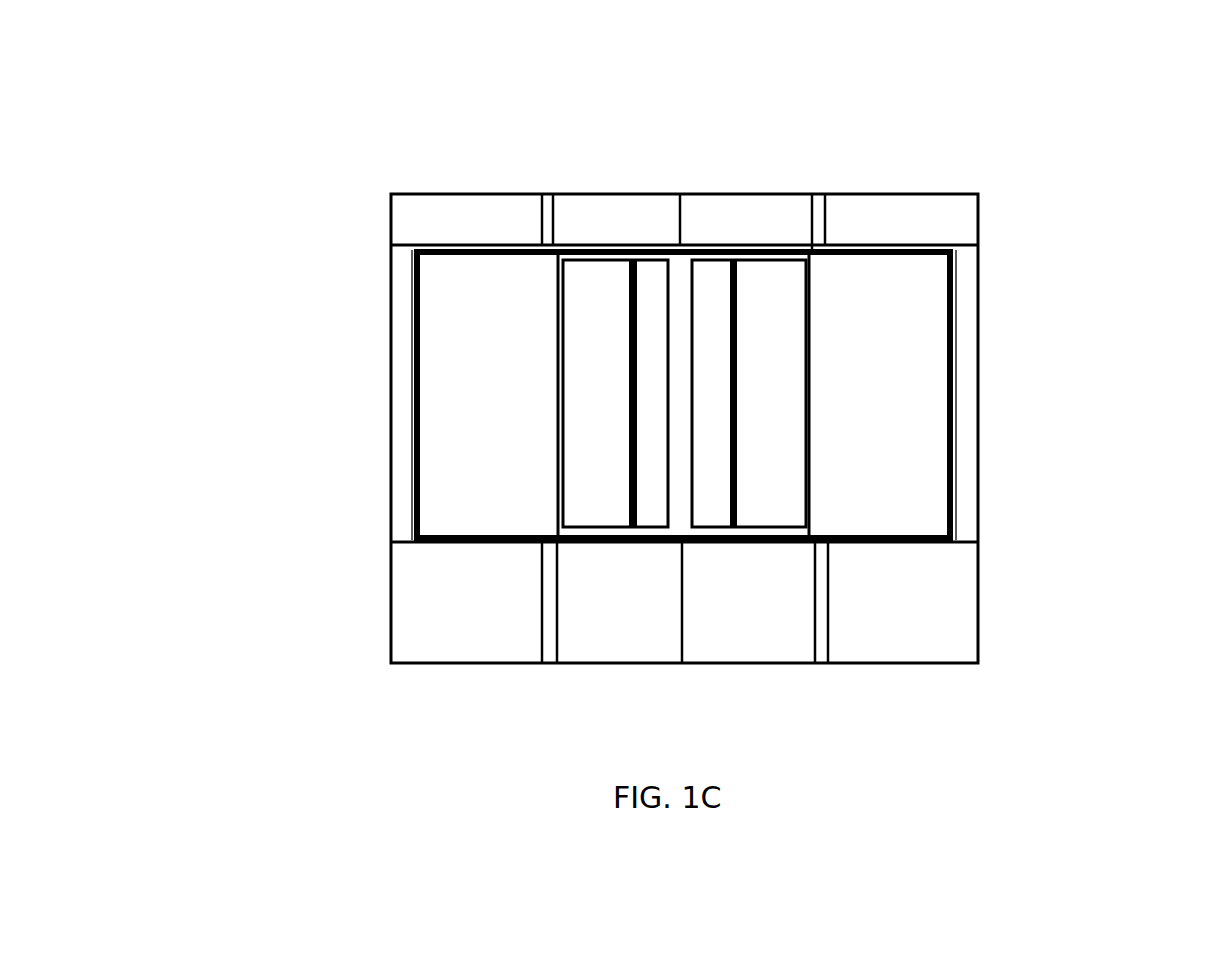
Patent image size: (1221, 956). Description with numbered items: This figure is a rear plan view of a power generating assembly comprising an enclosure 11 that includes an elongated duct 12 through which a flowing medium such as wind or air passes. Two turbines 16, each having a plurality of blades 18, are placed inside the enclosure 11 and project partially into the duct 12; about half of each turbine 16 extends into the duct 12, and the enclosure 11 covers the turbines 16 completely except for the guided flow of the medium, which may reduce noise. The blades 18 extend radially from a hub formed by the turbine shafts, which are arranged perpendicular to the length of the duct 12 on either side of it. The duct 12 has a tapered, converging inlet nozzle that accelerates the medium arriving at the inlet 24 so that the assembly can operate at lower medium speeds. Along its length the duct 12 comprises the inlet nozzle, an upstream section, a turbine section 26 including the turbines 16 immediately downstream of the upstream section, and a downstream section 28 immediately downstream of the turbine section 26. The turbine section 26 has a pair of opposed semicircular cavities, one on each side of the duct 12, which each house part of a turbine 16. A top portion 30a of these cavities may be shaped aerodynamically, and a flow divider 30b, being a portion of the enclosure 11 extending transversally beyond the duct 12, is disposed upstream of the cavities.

The enclosure 11 is at (390, 591).
The elongated duct 12 is at (814, 405).
The turbines 16 is at (684, 264).
The blades 18 is at (678, 507).
The inlet 24 is at (420, 500).
The turbine section 26 is at (377, 328).
The downstream section 28 is at (543, 395).
The top portion of the semicircular cavities 30a is at (902, 225).
The flow divider 30b is at (684, 213).